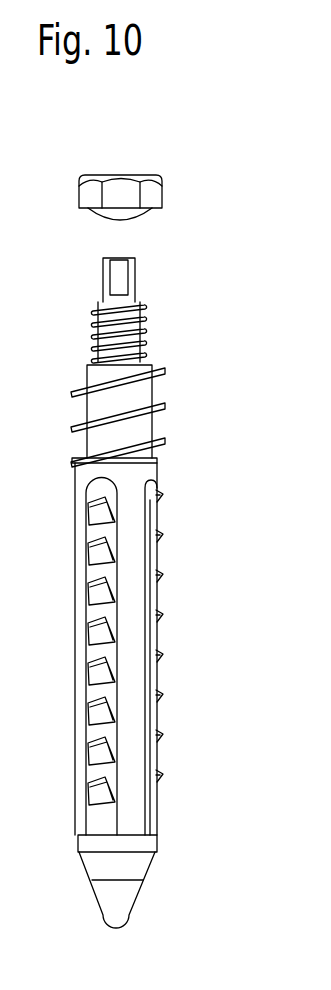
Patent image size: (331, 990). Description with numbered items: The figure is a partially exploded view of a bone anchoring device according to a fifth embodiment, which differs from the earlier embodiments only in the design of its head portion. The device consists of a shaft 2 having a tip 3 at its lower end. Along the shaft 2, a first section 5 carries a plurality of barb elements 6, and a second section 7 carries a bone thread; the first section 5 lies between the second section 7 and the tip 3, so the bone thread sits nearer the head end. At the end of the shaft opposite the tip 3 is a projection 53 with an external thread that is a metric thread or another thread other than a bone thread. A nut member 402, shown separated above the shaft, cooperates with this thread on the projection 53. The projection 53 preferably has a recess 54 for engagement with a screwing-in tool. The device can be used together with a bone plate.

The nut member 402 is at (122, 187).
The recess 54 is at (112, 273).
The projection 53 is at (137, 328).
The second section 7 is at (82, 405).
The shaft 2 is at (157, 458).
The first section 5 is at (130, 723).
The barb elements 6 is at (95, 632).
The tip 3 is at (108, 903).